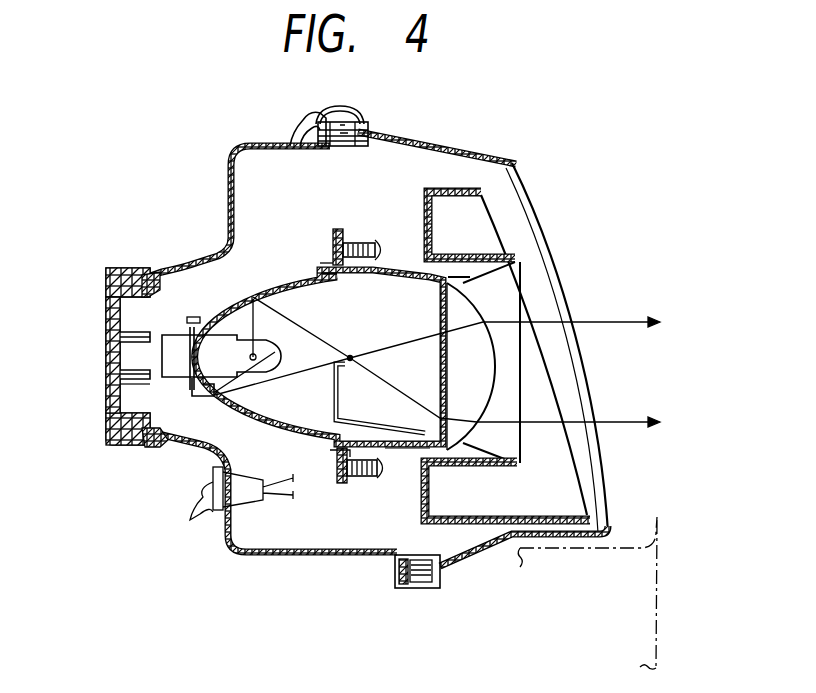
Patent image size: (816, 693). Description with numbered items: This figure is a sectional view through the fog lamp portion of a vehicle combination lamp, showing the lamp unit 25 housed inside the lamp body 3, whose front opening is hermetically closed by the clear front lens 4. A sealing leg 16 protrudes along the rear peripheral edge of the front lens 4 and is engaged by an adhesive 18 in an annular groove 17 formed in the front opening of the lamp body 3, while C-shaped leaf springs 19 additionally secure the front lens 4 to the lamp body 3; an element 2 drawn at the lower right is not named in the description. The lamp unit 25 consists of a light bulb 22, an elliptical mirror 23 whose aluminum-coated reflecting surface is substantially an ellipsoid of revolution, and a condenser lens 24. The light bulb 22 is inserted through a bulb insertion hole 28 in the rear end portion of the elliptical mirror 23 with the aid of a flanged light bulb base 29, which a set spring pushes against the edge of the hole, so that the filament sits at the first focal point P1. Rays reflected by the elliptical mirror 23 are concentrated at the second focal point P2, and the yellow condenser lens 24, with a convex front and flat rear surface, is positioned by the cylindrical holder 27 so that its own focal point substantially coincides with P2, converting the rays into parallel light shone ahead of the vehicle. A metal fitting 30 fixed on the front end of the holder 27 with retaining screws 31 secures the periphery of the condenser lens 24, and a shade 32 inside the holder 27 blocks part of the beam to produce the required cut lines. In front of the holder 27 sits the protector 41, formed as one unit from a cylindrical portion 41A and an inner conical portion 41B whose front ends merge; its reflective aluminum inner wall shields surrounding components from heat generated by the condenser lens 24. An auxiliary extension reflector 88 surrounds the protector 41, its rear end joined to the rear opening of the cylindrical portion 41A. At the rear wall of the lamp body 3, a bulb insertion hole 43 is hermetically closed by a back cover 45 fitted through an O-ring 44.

The vehicle body 2 is at (595, 579).
The lamp body 3 is at (225, 530).
The front lens 4 is at (607, 459).
The sealing leg 16 is at (469, 149).
The annular groove 17 is at (357, 142).
The adhesive 18 is at (368, 112).
The C-shaped leaf springs 19 is at (318, 118).
The light bulb 22 is at (260, 373).
The elliptical mirror 23 is at (274, 272).
The condenser lens 24 is at (497, 374).
The lamp unit 25 is at (305, 254).
The holder 27 is at (397, 455).
The bulb insertion hole 28 is at (190, 330).
The light bulb base 29 is at (122, 387).
The metal fitting 30 is at (412, 455).
The retaining screws 31 is at (380, 246).
The shade 32 is at (340, 400).
The protector 41 is at (625, 222).
The cylindrical portion 41A is at (497, 260).
The conical portion 41B is at (505, 297).
The bulb insertion hole 43 is at (168, 410).
The O-ring 44 is at (148, 448).
The back cover 45 is at (107, 336).
The auxiliary extension reflector 88 is at (476, 180).
The first focal point P1 is at (258, 353).
The second focal point P2 is at (351, 357).